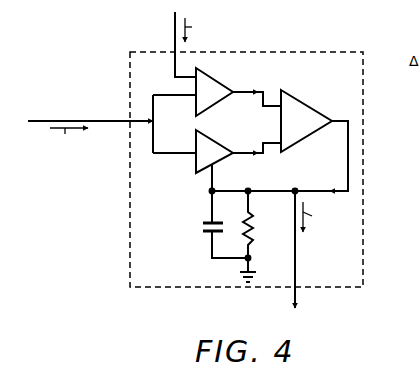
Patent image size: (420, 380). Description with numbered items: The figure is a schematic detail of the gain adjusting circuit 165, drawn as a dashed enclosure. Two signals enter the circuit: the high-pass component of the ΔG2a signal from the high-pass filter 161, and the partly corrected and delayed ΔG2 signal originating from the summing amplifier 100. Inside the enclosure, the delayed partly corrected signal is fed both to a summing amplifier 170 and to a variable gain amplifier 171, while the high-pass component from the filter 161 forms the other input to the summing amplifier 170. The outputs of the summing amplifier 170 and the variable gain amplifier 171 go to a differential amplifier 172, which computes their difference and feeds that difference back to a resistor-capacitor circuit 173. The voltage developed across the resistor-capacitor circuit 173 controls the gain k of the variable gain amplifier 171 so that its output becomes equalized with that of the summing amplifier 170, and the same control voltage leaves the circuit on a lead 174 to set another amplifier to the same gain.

The gain adjusting circuit 165 is at (130, 223).
The summing amplifier 100 is at (97, 115).
The high-pass filter 161 is at (146, 44).
The summing amplifier 170 is at (221, 81).
The variable gain amplifier 171 is at (195, 162).
The differential amplifier 172 is at (307, 102).
The resistor-capacitor circuit 173 is at (205, 241).
The lead 174 is at (302, 257).